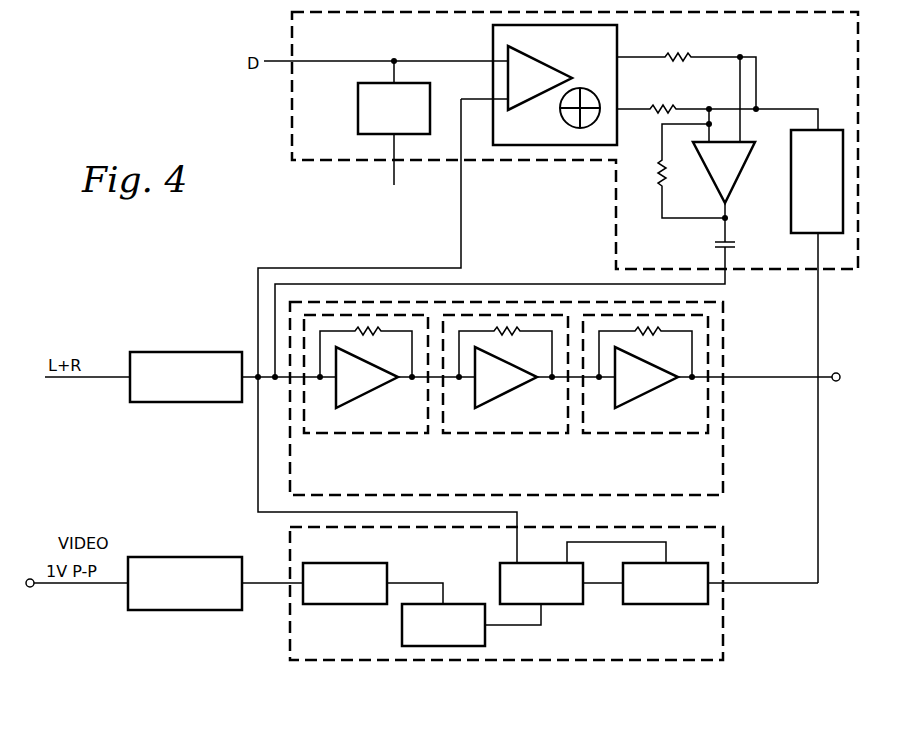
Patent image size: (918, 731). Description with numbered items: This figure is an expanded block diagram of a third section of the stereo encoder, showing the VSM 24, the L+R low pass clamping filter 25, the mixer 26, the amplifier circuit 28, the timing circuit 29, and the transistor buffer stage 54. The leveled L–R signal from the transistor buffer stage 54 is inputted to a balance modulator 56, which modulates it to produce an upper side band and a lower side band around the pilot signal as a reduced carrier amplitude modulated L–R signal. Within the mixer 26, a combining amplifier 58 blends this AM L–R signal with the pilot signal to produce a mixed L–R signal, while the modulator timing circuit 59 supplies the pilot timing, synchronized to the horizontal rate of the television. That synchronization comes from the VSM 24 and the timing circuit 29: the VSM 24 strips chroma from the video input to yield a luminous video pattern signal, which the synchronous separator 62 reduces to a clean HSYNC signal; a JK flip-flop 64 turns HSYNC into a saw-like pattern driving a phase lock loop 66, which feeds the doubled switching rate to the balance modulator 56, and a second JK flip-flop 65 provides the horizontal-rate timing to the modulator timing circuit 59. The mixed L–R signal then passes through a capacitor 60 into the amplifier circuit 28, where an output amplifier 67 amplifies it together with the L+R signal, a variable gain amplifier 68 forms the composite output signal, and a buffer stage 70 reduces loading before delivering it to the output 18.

The output 18 is at (840, 383).
The VSM 24 is at (185, 583).
The L+R low pass clamping filter 25 is at (186, 377).
The mixer 26 is at (559, 353).
The amplifier circuit 28 is at (561, 398).
The timing circuit 29 is at (527, 593).
The transistor buffer stage 54 is at (357, 108).
The balance modulator 56 is at (492, 47).
The combining amplifier 58 is at (740, 172).
The modulator timing circuit 59 is at (817, 356).
The capacitor 60 is at (712, 245).
The synchronous separator 62 is at (373, 583).
The JK flip-flop 64 is at (471, 625).
The JK flip-flop 65 is at (720, 583).
The phase lock loop 66 is at (583, 573).
The output amplifier 67 is at (366, 435).
The variable gain amplifier 68 is at (504, 435).
The buffer stage 70 is at (647, 435).